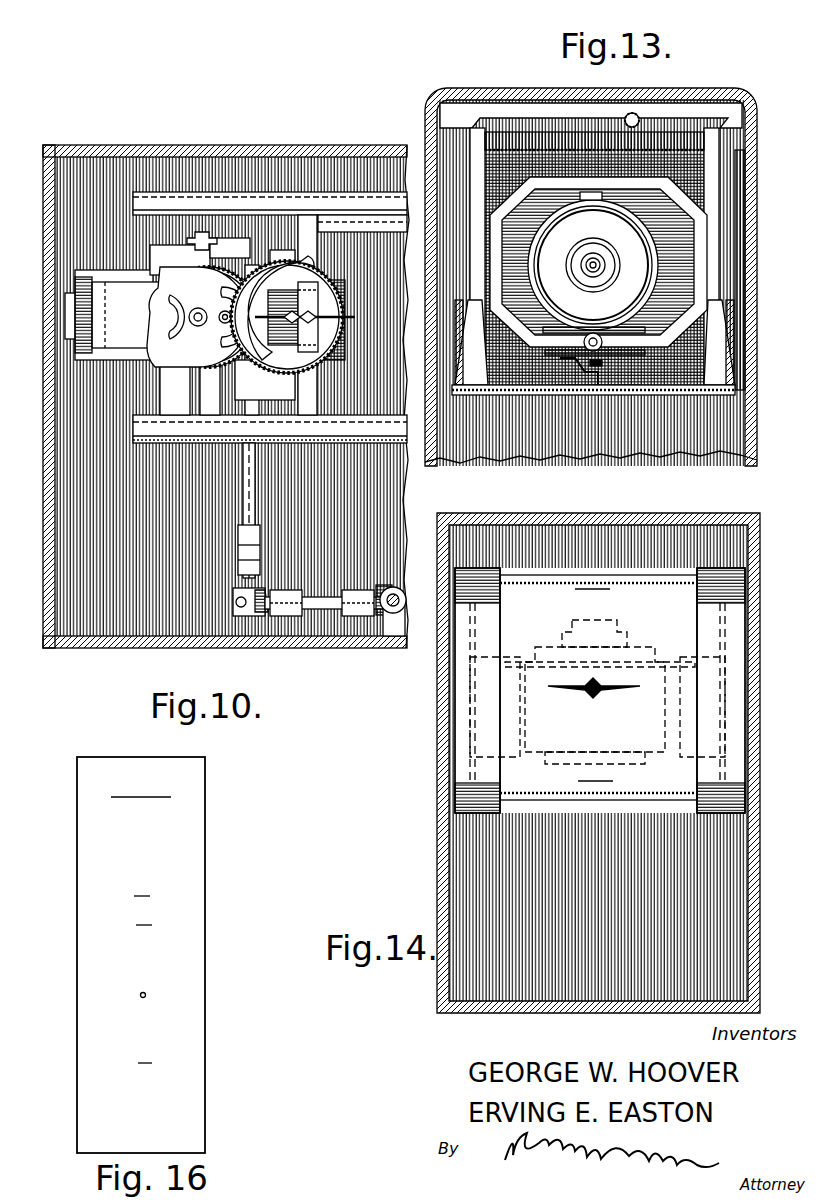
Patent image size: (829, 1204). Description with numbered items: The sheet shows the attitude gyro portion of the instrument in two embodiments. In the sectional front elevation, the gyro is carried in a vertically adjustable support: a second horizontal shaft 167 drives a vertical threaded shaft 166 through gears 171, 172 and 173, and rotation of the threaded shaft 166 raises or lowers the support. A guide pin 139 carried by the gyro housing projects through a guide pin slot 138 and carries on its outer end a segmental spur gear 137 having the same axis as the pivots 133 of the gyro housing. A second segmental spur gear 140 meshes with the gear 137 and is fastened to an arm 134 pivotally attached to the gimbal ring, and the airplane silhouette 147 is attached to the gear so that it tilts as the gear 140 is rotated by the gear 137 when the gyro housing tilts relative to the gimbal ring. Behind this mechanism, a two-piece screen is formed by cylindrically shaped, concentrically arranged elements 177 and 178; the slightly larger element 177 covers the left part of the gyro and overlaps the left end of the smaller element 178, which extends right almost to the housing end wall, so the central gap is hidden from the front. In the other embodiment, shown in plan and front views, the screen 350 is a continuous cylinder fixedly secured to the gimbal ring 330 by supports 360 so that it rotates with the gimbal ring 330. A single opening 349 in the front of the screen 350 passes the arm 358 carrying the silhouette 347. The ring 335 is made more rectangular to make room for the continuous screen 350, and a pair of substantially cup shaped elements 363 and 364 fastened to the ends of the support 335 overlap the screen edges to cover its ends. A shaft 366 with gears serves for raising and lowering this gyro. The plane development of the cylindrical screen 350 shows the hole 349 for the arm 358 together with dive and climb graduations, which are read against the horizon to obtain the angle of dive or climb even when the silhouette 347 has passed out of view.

In FIG. 10, the screen element 177 is at (240, 178).
In FIG. 10, the screen element 178 is at (353, 180).
In FIG. 10, the guide pin 139 is at (222, 268).
In FIG. 10, the arm 134 is at (272, 278).
In FIG. 10, the guide pin slot 138 is at (200, 303).
In FIG. 10, the pivots 133 is at (189, 317).
In FIG. 10, the segmental spur gear 137 is at (124, 315).
In FIG. 10, the airplane silhouette 147 is at (338, 316).
In FIG. 10, the second segmental spur gear 140 is at (264, 356).
In FIG. 10, the vertical threaded shaft 166 is at (245, 493).
In FIG. 10, the gear 173 is at (235, 604).
In FIG. 10, the second horizontal shaft 167 is at (330, 614).
In FIG. 10, the gear 172 is at (382, 618).
In FIG. 10, the gear 171 is at (403, 620).
In FIG. 13, the ring 335 is at (560, 112).
In FIG. 13, the screen 350 is at (672, 165).
In FIG. 14, the screen 350 is at (598, 582).
In FIG. 16, the screen 350 is at (205, 832).
In FIG. 13, the shaft 366 is at (625, 121).
In FIG. 13, the supports 360 is at (695, 178).
In FIG. 13, the gimbal ring 330 is at (690, 290).
In FIG. 13, the cup shaped element 364 is at (740, 352).
In FIG. 14, the cup shaped element 364 is at (740, 795).
In FIG. 13, the opening 349 is at (594, 351).
In FIG. 16, the opening 349 is at (146, 995).
In FIG. 13, the cup shaped element 363 is at (478, 388).
In FIG. 14, the cup shaped element 363 is at (470, 790).
In FIG. 13, the arm 358 is at (567, 362).
In FIG. 13, the silhouette 347 is at (600, 393).
In FIG. 14, the silhouette 347 is at (612, 690).